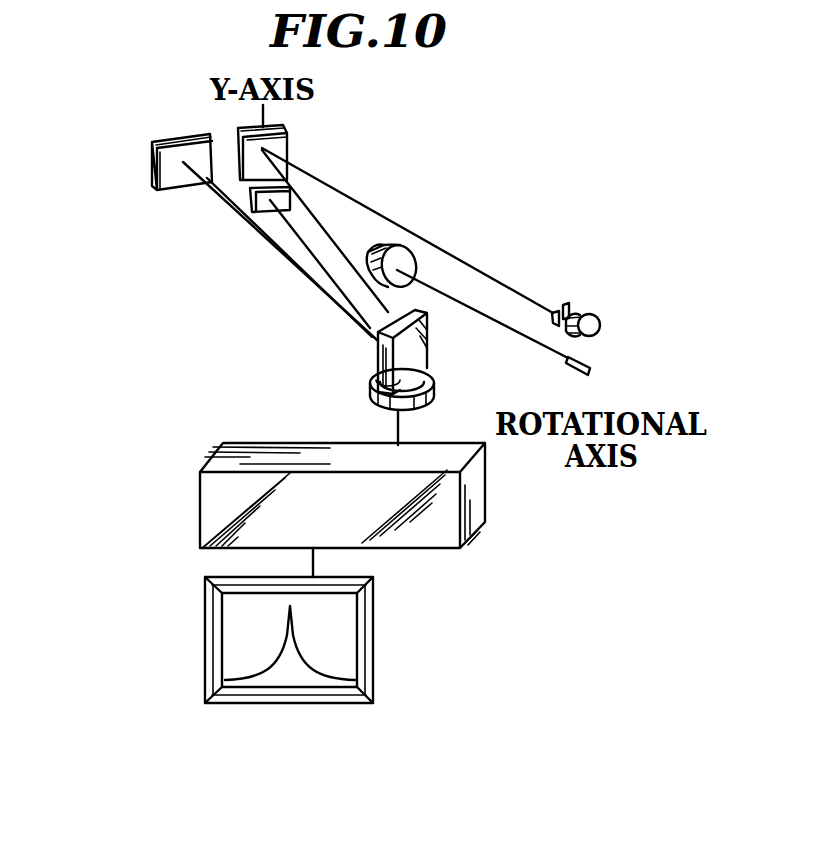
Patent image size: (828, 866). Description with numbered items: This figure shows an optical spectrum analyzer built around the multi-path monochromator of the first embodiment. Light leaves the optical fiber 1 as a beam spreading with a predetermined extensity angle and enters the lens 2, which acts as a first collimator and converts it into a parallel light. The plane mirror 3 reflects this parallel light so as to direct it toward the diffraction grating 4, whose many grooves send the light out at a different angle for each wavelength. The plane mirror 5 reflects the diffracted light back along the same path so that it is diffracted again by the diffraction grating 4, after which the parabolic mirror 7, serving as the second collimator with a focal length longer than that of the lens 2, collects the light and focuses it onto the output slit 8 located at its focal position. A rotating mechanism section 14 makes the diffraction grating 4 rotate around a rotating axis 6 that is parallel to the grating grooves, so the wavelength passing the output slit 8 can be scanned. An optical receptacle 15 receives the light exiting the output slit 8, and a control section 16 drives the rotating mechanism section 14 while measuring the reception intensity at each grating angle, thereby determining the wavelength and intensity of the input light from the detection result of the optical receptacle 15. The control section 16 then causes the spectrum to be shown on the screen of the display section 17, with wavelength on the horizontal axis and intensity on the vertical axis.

The optical fiber 1 is at (590, 371).
The lens 2 is at (413, 237).
The plane mirror 3 is at (267, 214).
The diffraction grating 4 is at (428, 353).
The plane mirror 5 is at (152, 172).
The rotating axis 6 is at (431, 388).
The parabolic mirror 7 is at (288, 143).
The output slit 8 is at (570, 300).
The rotating mechanism section 14 is at (372, 403).
The optical receptacle 15 is at (598, 323).
The control section 16 is at (200, 515).
The display section 17 is at (375, 652).